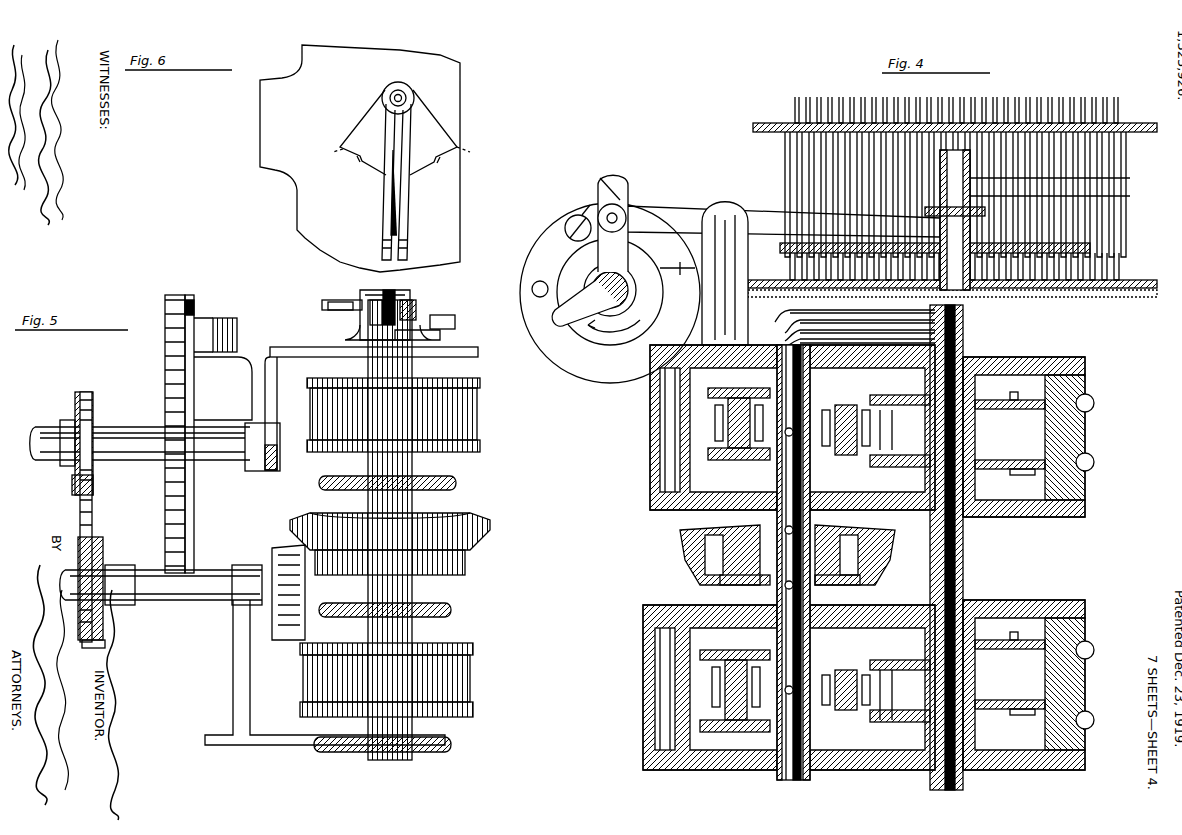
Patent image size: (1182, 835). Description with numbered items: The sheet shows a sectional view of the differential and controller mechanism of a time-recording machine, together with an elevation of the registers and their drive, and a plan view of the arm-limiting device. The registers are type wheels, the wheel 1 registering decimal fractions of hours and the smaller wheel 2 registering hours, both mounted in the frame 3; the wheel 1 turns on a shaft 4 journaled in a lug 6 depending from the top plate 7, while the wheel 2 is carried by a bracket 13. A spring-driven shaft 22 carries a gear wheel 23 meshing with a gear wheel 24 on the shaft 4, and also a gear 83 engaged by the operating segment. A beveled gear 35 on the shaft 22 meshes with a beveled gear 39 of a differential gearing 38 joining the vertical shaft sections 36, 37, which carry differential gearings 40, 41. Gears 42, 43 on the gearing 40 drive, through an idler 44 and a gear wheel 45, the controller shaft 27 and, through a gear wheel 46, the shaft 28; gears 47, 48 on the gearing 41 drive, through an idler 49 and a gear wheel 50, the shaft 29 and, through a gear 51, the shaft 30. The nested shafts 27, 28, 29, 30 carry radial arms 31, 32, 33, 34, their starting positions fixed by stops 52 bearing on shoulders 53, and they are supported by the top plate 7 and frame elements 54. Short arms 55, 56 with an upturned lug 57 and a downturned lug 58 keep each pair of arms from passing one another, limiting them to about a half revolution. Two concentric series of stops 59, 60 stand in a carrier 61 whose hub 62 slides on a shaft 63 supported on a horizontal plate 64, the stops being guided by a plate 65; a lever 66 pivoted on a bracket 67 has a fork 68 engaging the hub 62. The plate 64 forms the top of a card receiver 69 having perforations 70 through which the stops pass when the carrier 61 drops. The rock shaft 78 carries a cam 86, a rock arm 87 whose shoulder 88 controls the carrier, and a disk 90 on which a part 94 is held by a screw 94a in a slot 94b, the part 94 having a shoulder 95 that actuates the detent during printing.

In FIG. 5, the register wheel 1 is at (197, 400).
In FIG. 5, the register wheel 2 is at (200, 300).
In FIG. 5, the frame 3 is at (284, 745).
In FIG. 5, the shaft 4 is at (45, 432).
In FIG. 5, the lug 6 is at (278, 455).
In FIG. 5, the top plate 7 is at (318, 347).
In FIG. 4, the top plate 7 is at (1000, 358).
In FIG. 5, the bracket 13 is at (243, 320).
In FIG. 5, the shaft 22 is at (155, 598).
In FIG. 5, the gear wheel 23 is at (92, 487).
In FIG. 5, the gear wheel 24 is at (84, 392).
In FIG. 6, the controller shaft 27 is at (392, 94).
In FIG. 4, the controller shaft 27 is at (963, 565).
In FIG. 4, the controller shaft 28 is at (965, 541).
In FIG. 4, the controller shaft 29 is at (965, 478).
In FIG. 4, the controller shaft 30 is at (970, 360).
In FIG. 6, the radial arm 31 is at (386, 210).
In FIG. 5, the radial arm 31 is at (398, 298).
In FIG. 4, the radial arm 31 is at (838, 314).
In FIG. 6, the radial arm 32 is at (404, 211).
In FIG. 4, the radial arm 32 is at (838, 326).
In FIG. 6, the radial arm 33 is at (383, 242).
In FIG. 5, the radial arm 33 is at (376, 300).
In FIG. 4, the radial arm 33 is at (838, 338).
In FIG. 6, the radial arm 34 is at (406, 242).
In FIG. 5, the radial arm 34 is at (418, 308).
In FIG. 4, the radial arm 34 is at (838, 349).
In FIG. 5, the beveled gear 35 is at (282, 642).
In FIG. 4, the shaft section 36 is at (780, 602).
In FIG. 4, the shaft section 37 is at (780, 517).
In FIG. 5, the differential gearing 38 is at (467, 569).
In FIG. 4, the differential gearing 38 is at (718, 582).
In FIG. 5, the beveled gear 39 is at (492, 524).
In FIG. 4, the beveled gear 39 is at (685, 545).
In FIG. 5, the differential gearing 40 is at (472, 684).
In FIG. 4, the differential gearing 40 is at (712, 684).
In FIG. 5, the differential gearing 41 is at (478, 413).
In FIG. 4, the differential gearing 41 is at (715, 430).
In FIG. 5, the gear wheel 42 is at (474, 715).
In FIG. 4, the gear wheel 42 is at (715, 728).
In FIG. 5, the gear wheel 43 is at (474, 650).
In FIG. 4, the gear wheel 43 is at (714, 655).
In FIG. 4, the idler 44 is at (900, 726).
In FIG. 4, the gear wheel 45 is at (866, 695).
In FIG. 4, the gear wheel 46 is at (900, 655).
In FIG. 5, the gear 47 is at (480, 452).
In FIG. 4, the gear 47 is at (722, 460).
In FIG. 5, the gear 48 is at (480, 383).
In FIG. 4, the gear 48 is at (740, 392).
In FIG. 4, the idler 49 is at (900, 470).
In FIG. 4, the gear wheel 50 is at (867, 430).
In FIG. 4, the gear 51 is at (900, 390).
In FIG. 4, the fixed stop 52 is at (1018, 460).
In FIG. 4, the shoulder 53 is at (1005, 400).
In FIG. 5, the frame element 54 is at (458, 484).
In FIG. 4, the frame element 54 is at (680, 510).
In FIG. 6, the short arm 55 is at (366, 112).
In FIG. 5, the short arm 55 is at (360, 340).
In FIG. 6, the short arm 56 is at (430, 130).
In FIG. 5, the short arm 56 is at (425, 340).
In FIG. 6, the upturned lug 57 is at (368, 168).
In FIG. 5, the upturned lug 57 is at (356, 300).
In FIG. 6, the downturned lug 58 is at (338, 152).
In FIG. 5, the downturned lug 58 is at (330, 303).
In FIG. 4, the stop 59 is at (1095, 155).
In FIG. 4, the stop 60 is at (1120, 176).
In FIG. 4, the carrier 61 is at (1065, 253).
In FIG. 4, the hub 62 is at (970, 210).
In FIG. 4, the shaft 63 is at (960, 180).
In FIG. 4, the horizontal plate 64 is at (1033, 290).
In FIG. 4, the plate 65 is at (1140, 126).
In FIG. 4, the lever 66 is at (680, 205).
In FIG. 4, the bracket 67 is at (722, 210).
In FIG. 4, the fork 68 is at (942, 229).
In FIG. 4, the card receiver 69 is at (1133, 297).
In FIG. 4, the perforation 70 is at (1112, 300).
In FIG. 5, the shaft 78 is at (458, 318).
In FIG. 4, the shaft 78 is at (600, 296).
In FIG. 5, the gear 83 is at (100, 640).
In FIG. 5, the cam 86 is at (455, 330).
In FIG. 4, the cam 86 is at (566, 318).
In FIG. 4, the rock arm 87 is at (628, 250).
In FIG. 4, the shoulder 88 is at (605, 185).
In FIG. 4, the disk 90 is at (532, 260).
In FIG. 4, the part 94 is at (652, 312).
In FIG. 4, the screw 94a is at (572, 220).
In FIG. 4, the slot 94b is at (590, 205).
In FIG. 4, the shoulder 95 is at (677, 279).